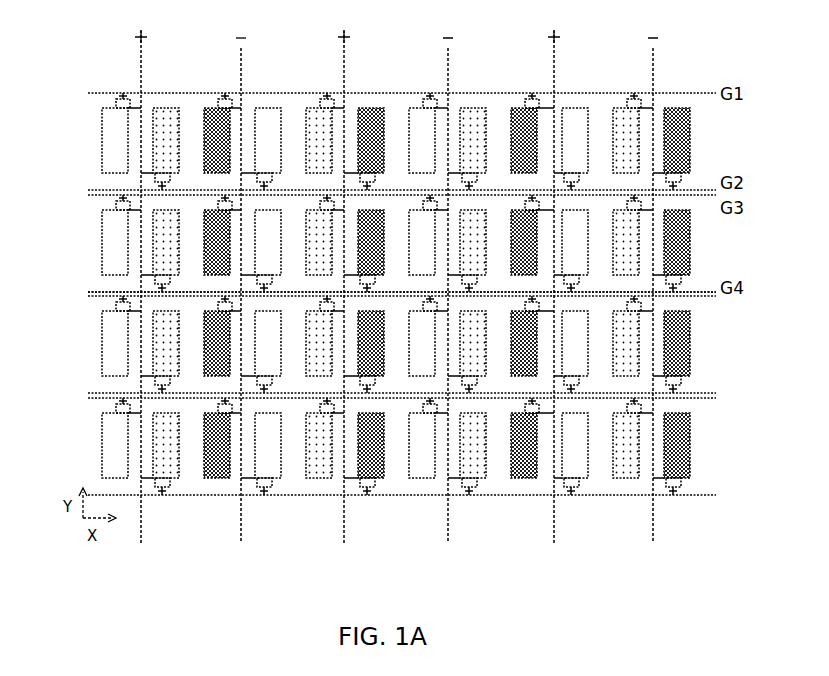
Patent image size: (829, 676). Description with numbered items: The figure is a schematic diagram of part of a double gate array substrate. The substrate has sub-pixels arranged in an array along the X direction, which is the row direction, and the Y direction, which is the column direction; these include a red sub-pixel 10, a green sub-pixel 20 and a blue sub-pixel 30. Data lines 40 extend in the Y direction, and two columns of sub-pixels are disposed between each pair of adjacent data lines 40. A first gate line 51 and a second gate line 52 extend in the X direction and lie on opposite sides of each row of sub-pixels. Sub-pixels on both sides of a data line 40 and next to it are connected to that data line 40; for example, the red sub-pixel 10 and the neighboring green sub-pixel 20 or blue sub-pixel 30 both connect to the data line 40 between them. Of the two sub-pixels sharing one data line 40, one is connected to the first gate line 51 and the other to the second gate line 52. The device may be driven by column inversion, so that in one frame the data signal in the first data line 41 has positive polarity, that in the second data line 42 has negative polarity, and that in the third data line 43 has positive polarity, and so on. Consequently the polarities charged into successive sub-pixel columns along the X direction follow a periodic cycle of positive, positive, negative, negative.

The red sub-pixel 10 is at (118, 148).
The green sub-pixel 20 is at (163, 123).
The blue sub-pixel 30 is at (215, 140).
The data lines 40 is at (356, 286).
The first data line 41 is at (140, 84).
The second data line 42 is at (240, 532).
The third data line 43 is at (343, 528).
The first gate line 51 is at (105, 196).
The second gate line 52 is at (100, 291).